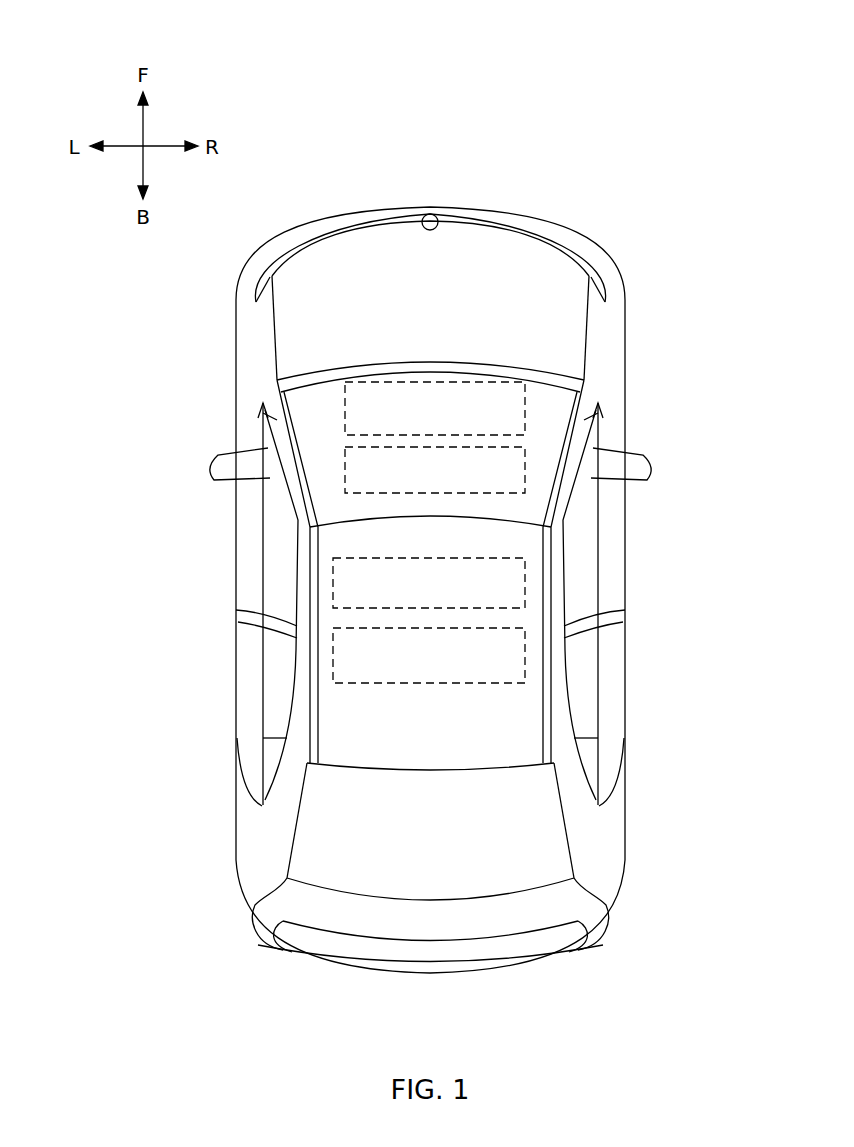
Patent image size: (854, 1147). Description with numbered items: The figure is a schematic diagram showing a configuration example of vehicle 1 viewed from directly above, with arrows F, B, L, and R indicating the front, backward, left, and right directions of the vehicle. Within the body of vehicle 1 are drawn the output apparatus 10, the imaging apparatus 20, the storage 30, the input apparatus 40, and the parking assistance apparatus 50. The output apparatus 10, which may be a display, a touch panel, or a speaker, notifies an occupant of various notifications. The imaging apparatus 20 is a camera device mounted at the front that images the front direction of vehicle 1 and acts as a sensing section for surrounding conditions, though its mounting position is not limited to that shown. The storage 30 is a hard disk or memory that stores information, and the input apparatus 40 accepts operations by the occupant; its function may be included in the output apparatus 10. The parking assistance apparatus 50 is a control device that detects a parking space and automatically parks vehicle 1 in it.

The vehicle 1 is at (430, 494).
The output apparatus 10 is at (528, 412).
The imaging apparatus 20 is at (433, 214).
The storage 30 is at (528, 577).
The input apparatus 40 is at (528, 465).
The parking assistance apparatus 50 is at (528, 668).